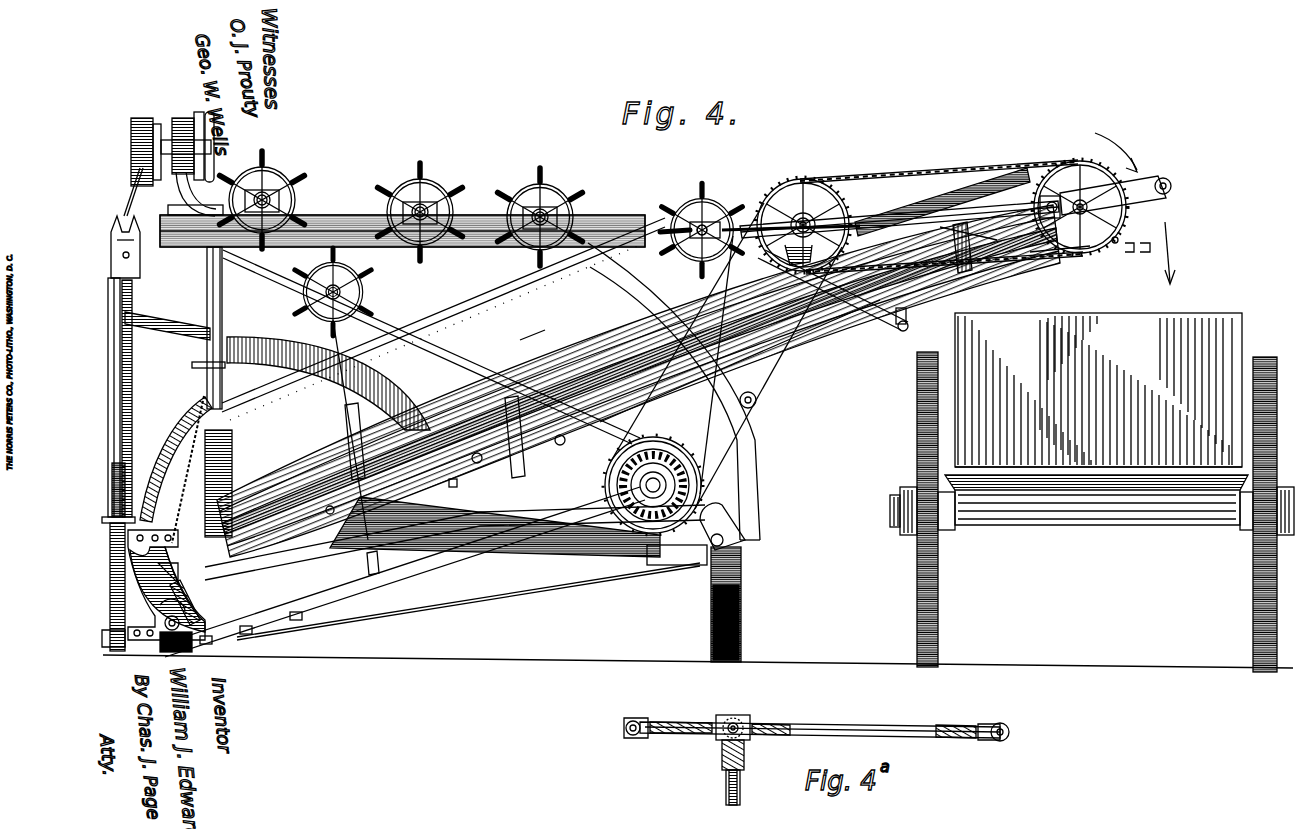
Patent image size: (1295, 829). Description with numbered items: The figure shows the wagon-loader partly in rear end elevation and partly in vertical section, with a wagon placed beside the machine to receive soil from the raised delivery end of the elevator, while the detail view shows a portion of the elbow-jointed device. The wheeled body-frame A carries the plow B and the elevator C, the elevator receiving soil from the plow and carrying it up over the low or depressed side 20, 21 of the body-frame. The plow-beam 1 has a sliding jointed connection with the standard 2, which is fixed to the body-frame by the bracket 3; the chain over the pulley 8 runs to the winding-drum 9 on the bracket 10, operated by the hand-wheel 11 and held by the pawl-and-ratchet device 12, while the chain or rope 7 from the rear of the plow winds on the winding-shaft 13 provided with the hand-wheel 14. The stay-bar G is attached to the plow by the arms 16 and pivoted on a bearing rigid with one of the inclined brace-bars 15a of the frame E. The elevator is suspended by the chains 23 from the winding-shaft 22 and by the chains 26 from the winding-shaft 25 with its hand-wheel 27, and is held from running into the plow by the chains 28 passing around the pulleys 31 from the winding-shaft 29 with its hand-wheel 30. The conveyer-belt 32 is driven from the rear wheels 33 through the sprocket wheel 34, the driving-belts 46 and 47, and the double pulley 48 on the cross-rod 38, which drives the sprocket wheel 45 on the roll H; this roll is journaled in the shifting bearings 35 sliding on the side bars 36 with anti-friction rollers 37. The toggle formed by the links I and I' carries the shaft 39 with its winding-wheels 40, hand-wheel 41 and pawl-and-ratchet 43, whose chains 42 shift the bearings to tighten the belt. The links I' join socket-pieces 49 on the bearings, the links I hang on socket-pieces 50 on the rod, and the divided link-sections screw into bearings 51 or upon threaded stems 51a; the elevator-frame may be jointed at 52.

In FIG. 4, the plow-beam 1 is at (126, 480).
In FIG. 4, the standard 2 is at (108, 400).
In FIG. 4, the bracket 3 is at (158, 328).
In FIG. 4, the raising and lowering chain or rope 7 is at (225, 398).
In FIG. 4, the pulley 8 is at (120, 232).
In FIG. 4, the winding-drum 9 is at (131, 140).
In FIG. 4, the bracket 10 is at (180, 190).
In FIG. 4, the hand-wheel 11 is at (213, 145).
In FIG. 4, the clutch or pawl-and-ratchet device 12 is at (188, 148).
In FIG. 4, the winding-shaft 13 is at (276, 180).
In FIG. 4, the hand-wheel 14 is at (256, 185).
In FIG. 4, the inclined brace-bar 15a is at (470, 358).
In FIG. 4, the arms 16 is at (176, 540).
In FIG. 4, the side of the body-frame 20 is at (752, 522).
In FIG. 4, the depressed portion 21 is at (312, 290).
In FIG. 4, the rotary winding drum or shaft 22 is at (350, 290).
In FIG. 4, the links or chains or ropes 23 is at (530, 355).
In FIG. 4, the rotary drum or winding-shaft 25 is at (632, 150).
In FIG. 4, the links, chains, or ropes 26 is at (624, 255).
In FIG. 4, the hand-wheel 27 is at (552, 185).
In FIG. 4, the chains or ropes 28 is at (551, 585).
In FIG. 4, the rotary winding-shaft 29 is at (432, 192).
In FIG. 4, the hand-wheel 30 is at (408, 190).
In FIG. 4, the pulleys 31 is at (1116, 246).
In FIG. 4, the endless carrier or conveyer-belt 32 is at (896, 178).
In FIG. 4, the rear wheels 33 is at (232, 490).
In FIG. 4, the sprocket or belt wheel 34 is at (705, 463).
In FIG. 4, the shifting bearings 35 is at (1090, 255).
In FIG. 4, the side bars 36 is at (903, 334).
In FIG. 4, the anti-friction rollers 37 is at (1060, 250).
In FIG. 4, the cross-rod 38 is at (880, 170).
In FIG. 4A, the cross-rod 38 is at (740, 733).
In FIG. 4, the winding-drum or rotary shaft 39 is at (736, 210).
In FIG. 4A, the winding-drum or rotary shaft 39 is at (628, 737).
In FIG. 4, the winding-wheels 40 is at (662, 230).
In FIG. 4, the hand-wheel 41 is at (712, 200).
In FIG. 4, the chains or cords 42 is at (996, 233).
In FIG. 4, the pawl-and-ratchet device 43 is at (692, 200).
In FIG. 4, the sprocket or belt wheel 45 is at (1085, 150).
In FIG. 4, the driving-belt 46 is at (757, 400).
In FIG. 4, the driving-belt 47 is at (958, 172).
In FIG. 4, the double sprocket or belt pulley 48 is at (800, 180).
In FIG. 4, the socket-pieces 49 is at (1044, 172).
In FIG. 4A, the socket-pieces 49 is at (988, 722).
In FIG. 4, the socket-pieces 50 is at (775, 248).
In FIG. 4A, the socket-pieces 50 is at (722, 762).
In FIG. 4, the bearings 51 is at (800, 215).
In FIG. 4A, the bearings 51 is at (735, 718).
In FIG. 4A, the threaded stems 51a is at (775, 705).
In FIG. 4, the joint 52 is at (746, 418).
In FIG. 4, the wheeled body-frame A is at (328, 383).
In FIG. 4, the plow B is at (153, 591).
In FIG. 4, the elevator C is at (638, 381).
In FIG. 4, the support or frame E is at (402, 221).
In FIG. 4, the stay-bar G is at (443, 540).
In FIG. 4, the roll H is at (1137, 246).
In FIG. 4, the arms or links I is at (740, 361).
In FIG. 4A, the arms or links I is at (715, 787).
In FIG. 4, the arms or links I' is at (899, 188).
In FIG. 4A, the arms or links I' is at (820, 717).